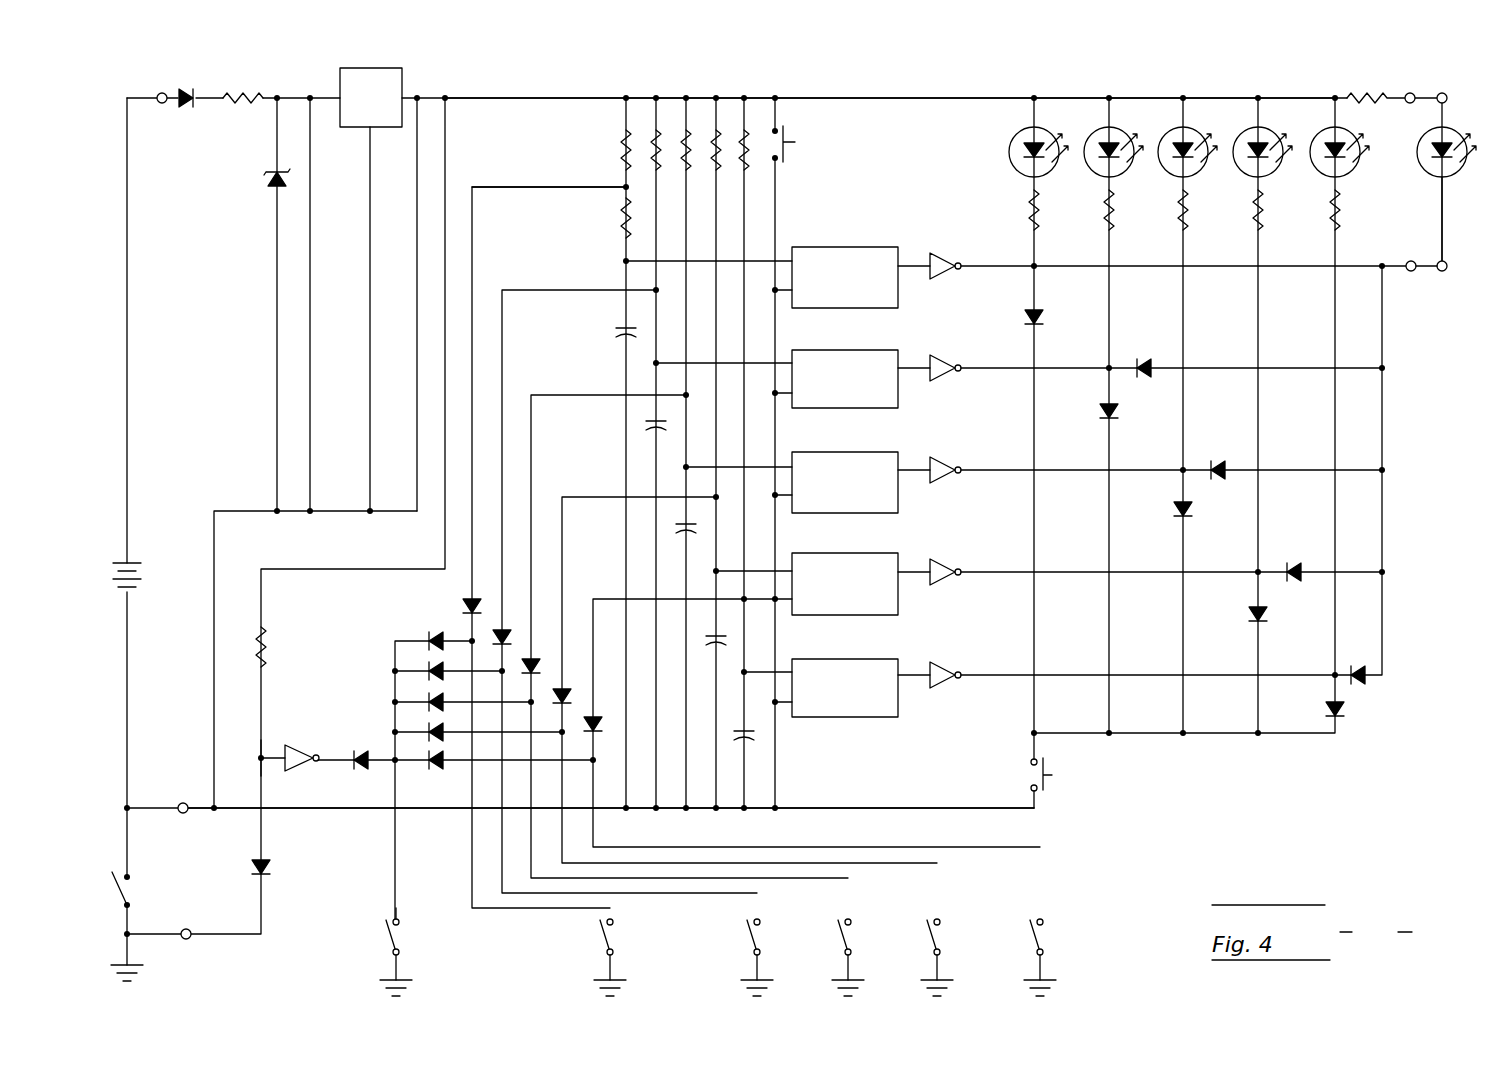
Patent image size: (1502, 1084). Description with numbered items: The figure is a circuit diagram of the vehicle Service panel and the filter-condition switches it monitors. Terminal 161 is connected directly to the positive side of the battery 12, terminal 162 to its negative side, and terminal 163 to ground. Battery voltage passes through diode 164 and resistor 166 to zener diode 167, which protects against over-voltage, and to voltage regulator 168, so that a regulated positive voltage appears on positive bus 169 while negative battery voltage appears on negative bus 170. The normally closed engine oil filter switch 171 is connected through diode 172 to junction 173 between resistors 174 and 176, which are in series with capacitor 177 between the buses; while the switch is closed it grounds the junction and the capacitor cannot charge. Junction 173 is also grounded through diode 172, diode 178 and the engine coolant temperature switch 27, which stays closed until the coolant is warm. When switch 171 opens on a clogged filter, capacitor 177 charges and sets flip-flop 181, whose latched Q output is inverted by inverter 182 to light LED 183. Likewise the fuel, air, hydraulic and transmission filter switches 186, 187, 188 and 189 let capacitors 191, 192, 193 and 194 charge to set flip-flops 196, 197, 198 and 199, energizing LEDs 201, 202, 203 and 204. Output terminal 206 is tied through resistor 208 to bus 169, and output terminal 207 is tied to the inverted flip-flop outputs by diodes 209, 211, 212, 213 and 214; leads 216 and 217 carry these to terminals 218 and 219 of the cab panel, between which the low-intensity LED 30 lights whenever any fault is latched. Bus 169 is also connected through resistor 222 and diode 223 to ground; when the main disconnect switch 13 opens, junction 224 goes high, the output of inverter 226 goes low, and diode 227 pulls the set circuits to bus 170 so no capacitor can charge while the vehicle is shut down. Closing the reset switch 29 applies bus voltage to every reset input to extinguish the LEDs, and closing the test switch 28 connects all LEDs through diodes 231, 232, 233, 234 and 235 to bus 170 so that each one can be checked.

The battery 12 is at (136, 562).
The main disconnect switch 13 is at (120, 900).
The engine coolant temperature switch 27 is at (388, 938).
The test switch 28 is at (1046, 790).
The reset switch 29 is at (790, 156).
The LED 30 is at (1420, 172).
The terminal 161 is at (158, 94).
The terminal 162 is at (188, 784).
The terminal 163 is at (188, 940).
The diode 164 is at (188, 108).
The resistor 166 is at (248, 92).
The zener diode 167 is at (270, 190).
The voltage regulator 168 is at (402, 82).
The positive bus 169 is at (850, 96).
The negative bus 170 is at (880, 806).
The engine oil filter switch 171 is at (602, 942).
The diode 172 is at (466, 596).
The junction 173 is at (622, 186).
The resistor 174 is at (620, 148).
The resistor 176 is at (620, 222).
The capacitor 177 is at (618, 340).
The diode 178 is at (438, 628).
The flip-flop 181 is at (868, 246).
The inverter 182 is at (953, 222).
The LED 183 is at (1016, 135).
The fuel filter switch 186 is at (752, 940).
The air filter switch 187 is at (843, 940).
The hydraulic fluid filter switch 188 is at (932, 900).
The transmission fluid filter switch 189 is at (1032, 898).
The capacitor 191 is at (650, 420).
The capacitor 192 is at (682, 520).
The capacitor 193 is at (728, 643).
The capacitor 194 is at (756, 732).
The flip-flop 196 is at (848, 349).
The flip-flop 197 is at (858, 451).
The flip-flop 198 is at (858, 552).
The flip-flop 199 is at (850, 658).
The LED 201 is at (1098, 168).
The LED 202 is at (1172, 168).
The LED 203 is at (1248, 168).
The LED 204 is at (1324, 168).
The output terminal 206 is at (1408, 92).
The output terminal 207 is at (1408, 260).
The resistor 208 is at (1348, 96).
The diode 209 is at (1098, 228).
The diode 211 is at (1156, 336).
The diode 212 is at (1236, 430).
The diode 213 is at (1314, 532).
The diode 214 is at (1355, 688).
The lead 216 is at (1428, 104).
The lead 217 is at (1442, 272).
The terminal 218 is at (1452, 84).
The terminal 219 is at (1440, 240).
The resistor 222 is at (268, 640).
The diode 223 is at (252, 866).
The junction 224 is at (258, 758).
The inverter 226 is at (305, 732).
The diode 227 is at (365, 772).
The diode 231 is at (1044, 318).
The diode 232 is at (1120, 412).
The diode 233 is at (1194, 510).
The diode 234 is at (1270, 614).
The diode 235 is at (1328, 708).